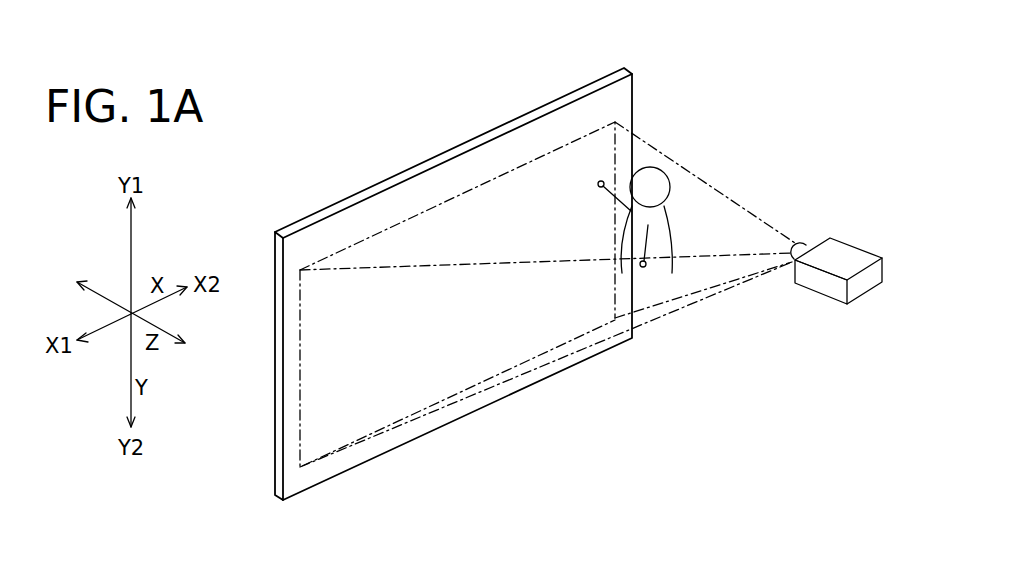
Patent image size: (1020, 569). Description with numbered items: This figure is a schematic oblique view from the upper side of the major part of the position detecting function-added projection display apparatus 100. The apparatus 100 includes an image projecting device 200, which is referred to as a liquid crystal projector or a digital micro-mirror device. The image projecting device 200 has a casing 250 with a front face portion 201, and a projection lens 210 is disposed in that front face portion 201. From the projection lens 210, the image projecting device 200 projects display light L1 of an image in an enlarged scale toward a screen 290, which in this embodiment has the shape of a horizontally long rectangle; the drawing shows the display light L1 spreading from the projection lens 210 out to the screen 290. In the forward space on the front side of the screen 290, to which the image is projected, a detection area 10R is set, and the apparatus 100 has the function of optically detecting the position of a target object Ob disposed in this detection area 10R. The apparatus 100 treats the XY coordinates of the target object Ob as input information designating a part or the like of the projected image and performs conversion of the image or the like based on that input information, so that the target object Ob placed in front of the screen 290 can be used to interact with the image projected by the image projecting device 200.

The position detecting function-added projection display apparatus 100 is at (719, 231).
The image projecting device 200 is at (803, 290).
The front face portion 201 is at (811, 246).
The projection lens 210 is at (768, 268).
The casing 250 is at (857, 252).
The screen 290 is at (283, 467).
The detection area 10R is at (557, 147).
The target object Ob is at (599, 183).
The display light L1 is at (688, 168).